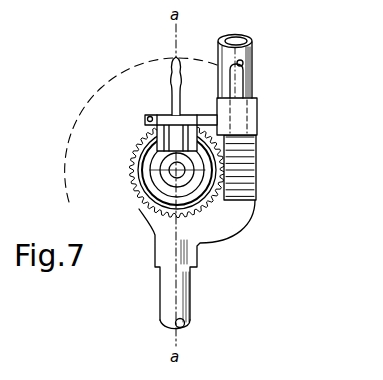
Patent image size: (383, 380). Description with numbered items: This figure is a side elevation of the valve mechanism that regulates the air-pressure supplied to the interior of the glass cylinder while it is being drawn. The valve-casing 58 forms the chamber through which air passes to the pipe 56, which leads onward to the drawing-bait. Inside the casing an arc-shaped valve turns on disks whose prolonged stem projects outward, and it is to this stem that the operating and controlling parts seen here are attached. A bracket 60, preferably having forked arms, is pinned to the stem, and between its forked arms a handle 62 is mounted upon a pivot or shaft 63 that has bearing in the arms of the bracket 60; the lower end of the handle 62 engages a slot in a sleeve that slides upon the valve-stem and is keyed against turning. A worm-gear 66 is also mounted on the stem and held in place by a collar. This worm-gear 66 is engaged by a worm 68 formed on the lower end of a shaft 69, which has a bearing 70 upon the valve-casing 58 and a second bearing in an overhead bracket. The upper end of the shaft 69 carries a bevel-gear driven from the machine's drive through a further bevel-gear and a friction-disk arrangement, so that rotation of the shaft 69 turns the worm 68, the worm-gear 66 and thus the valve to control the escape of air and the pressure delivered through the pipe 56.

The pipe 56 is at (252, 45).
The valve-casing 58 is at (213, 227).
The bracket 60 is at (168, 181).
The handle 62 is at (171, 73).
The pivot or shaft 63 is at (148, 117).
The worm-gear 66 is at (132, 161).
The worm 68 is at (247, 178).
The shaft 69 is at (234, 77).
The bearing 70 is at (252, 124).